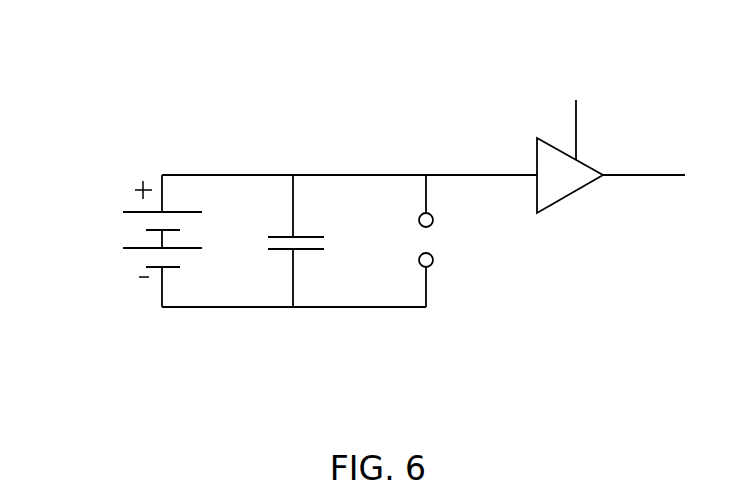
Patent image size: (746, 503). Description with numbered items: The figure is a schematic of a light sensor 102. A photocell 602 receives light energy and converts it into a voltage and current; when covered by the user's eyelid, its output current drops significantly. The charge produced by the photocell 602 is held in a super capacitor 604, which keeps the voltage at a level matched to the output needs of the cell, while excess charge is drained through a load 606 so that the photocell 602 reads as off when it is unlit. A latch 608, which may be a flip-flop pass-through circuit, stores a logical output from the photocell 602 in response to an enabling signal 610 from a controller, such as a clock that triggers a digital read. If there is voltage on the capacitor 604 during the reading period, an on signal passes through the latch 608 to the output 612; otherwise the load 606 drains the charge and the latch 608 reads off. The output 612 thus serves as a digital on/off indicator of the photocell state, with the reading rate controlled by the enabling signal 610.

The light sensor 102 is at (277, 39).
The photocell 602 is at (128, 227).
The super capacitor 604 is at (282, 250).
The load 606 is at (426, 240).
The latch 608 is at (537, 147).
The enabling signal 610 is at (572, 110).
The output 612 is at (655, 175).